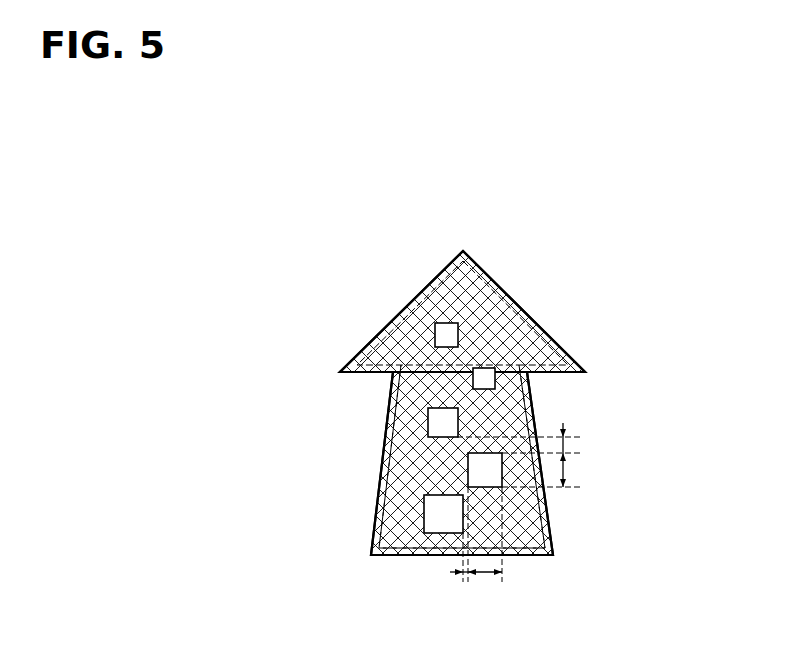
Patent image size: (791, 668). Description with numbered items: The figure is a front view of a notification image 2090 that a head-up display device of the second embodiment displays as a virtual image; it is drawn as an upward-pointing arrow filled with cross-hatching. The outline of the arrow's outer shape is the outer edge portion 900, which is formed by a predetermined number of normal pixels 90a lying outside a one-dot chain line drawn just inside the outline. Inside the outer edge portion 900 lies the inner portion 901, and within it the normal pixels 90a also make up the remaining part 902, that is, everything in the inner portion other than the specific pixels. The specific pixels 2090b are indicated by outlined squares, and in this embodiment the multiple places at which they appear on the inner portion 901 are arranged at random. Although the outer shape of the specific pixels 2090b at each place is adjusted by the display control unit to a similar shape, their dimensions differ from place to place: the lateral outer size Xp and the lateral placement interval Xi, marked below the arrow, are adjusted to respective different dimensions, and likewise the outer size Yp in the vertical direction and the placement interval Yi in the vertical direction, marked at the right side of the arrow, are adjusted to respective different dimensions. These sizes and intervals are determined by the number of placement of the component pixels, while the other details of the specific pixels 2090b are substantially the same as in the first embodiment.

The outer edge portion 900 is at (550, 557).
The normal pixels 90a is at (515, 302).
The notification image 2090 is at (486, 267).
The remaining part 902 is at (410, 385).
The inner portion 901 is at (468, 476).
The specific pixels 2090b is at (438, 327).
The placement interval in the vertical direction Yi is at (568, 450).
The outer size in the vertical direction Yp is at (567, 470).
The lateral placement interval Xi is at (466, 582).
The lateral outer size Xp is at (490, 583).